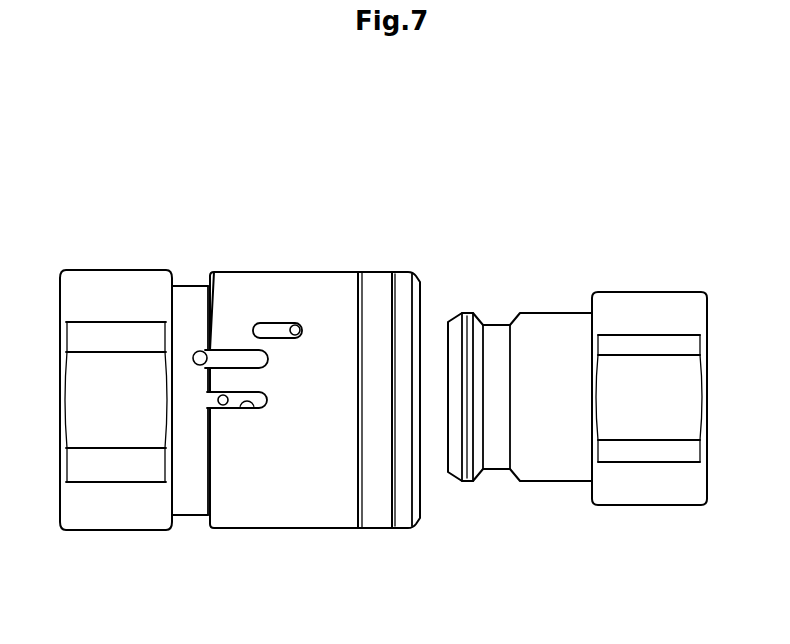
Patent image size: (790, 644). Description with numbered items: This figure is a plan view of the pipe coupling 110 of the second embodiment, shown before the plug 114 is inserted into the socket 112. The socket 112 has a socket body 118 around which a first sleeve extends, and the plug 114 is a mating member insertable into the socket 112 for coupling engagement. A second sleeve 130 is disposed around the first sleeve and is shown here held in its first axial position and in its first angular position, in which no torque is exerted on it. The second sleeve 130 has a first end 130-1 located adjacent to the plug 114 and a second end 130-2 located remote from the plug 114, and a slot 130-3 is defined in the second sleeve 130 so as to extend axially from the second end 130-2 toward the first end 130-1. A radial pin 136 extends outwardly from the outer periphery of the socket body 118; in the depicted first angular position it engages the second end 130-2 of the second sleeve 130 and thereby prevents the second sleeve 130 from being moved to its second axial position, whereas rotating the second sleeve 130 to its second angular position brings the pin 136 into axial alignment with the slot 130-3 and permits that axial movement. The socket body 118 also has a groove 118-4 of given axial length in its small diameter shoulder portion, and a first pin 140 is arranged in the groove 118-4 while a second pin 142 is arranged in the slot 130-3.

The pipe coupling 110 is at (462, 240).
The socket 112 is at (148, 240).
The plug 114 is at (548, 283).
The socket body 118 is at (122, 507).
The groove 118-4 is at (287, 325).
The second sleeve 130 is at (282, 282).
The first end 130-1 is at (418, 284).
The second end 130-2 is at (207, 297).
The slot 130-3 is at (232, 350).
The radial pin 136 is at (193, 355).
The first pin 140 is at (302, 330).
The second pin 142 is at (217, 403).